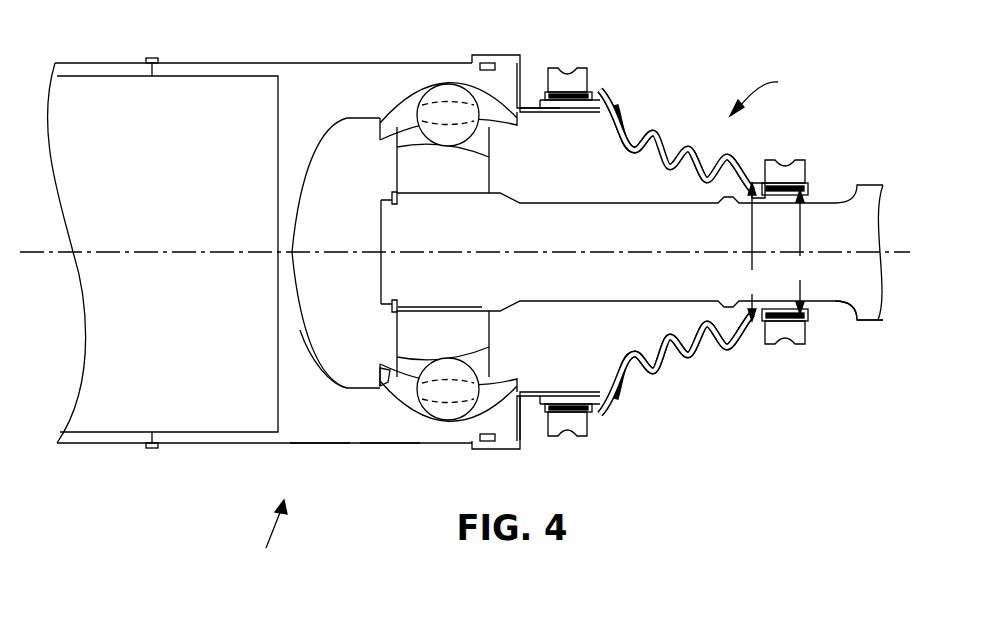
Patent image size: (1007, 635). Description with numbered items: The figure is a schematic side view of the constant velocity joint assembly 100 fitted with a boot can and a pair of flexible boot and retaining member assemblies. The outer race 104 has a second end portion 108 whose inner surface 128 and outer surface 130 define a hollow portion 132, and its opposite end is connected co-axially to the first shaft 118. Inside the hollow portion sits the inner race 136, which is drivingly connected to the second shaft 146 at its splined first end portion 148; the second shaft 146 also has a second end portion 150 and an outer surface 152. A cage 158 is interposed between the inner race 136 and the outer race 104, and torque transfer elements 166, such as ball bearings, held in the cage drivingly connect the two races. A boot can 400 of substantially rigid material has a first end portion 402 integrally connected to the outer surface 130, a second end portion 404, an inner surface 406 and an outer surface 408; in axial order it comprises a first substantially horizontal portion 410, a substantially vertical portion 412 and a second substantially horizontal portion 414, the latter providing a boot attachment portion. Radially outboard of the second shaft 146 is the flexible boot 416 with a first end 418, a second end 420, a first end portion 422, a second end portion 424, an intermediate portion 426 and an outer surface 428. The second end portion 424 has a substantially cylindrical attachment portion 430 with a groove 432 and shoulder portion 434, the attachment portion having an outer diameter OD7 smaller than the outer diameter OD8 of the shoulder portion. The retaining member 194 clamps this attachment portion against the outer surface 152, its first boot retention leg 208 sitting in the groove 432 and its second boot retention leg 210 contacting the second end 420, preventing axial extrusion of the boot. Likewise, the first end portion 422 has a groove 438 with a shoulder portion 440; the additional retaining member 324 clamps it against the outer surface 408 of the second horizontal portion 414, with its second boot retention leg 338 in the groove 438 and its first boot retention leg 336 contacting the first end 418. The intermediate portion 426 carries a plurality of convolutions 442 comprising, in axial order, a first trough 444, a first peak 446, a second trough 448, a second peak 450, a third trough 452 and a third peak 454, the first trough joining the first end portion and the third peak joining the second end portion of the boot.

The constant velocity joint assembly 100 is at (263, 540).
The outer race 104 is at (240, 443).
The second end portion 108 is at (388, 443).
The first shaft 118 is at (115, 443).
The inner surface 128 is at (347, 391).
The outer surface 130 is at (318, 443).
The hollow portion 132 is at (353, 369).
The inner race 136 is at (452, 344).
The second shaft 146 is at (525, 237).
The first end portion 148 is at (442, 307).
The second end portion 150 is at (873, 322).
The outer surface 152 is at (858, 322).
The cage 158 is at (387, 380).
The torque transfer elements 166 is at (445, 414).
The retaining member 194 is at (705, 325).
The first boot retention leg 208 is at (778, 193).
The second boot retention leg 210 is at (812, 188).
The additional retaining member 324 is at (568, 75).
The first boot retention leg 336 is at (572, 437).
The second boot retention leg 338 is at (595, 418).
The boot can 400 is at (519, 75).
The first end portion 402 is at (490, 62).
The second end portion 404 is at (595, 404).
The inner surface 406 is at (518, 112).
The outer surface 408 is at (540, 100).
The first substantially horizontal portion 410 is at (493, 452).
The substantially vertical portion 412 is at (523, 433).
The second substantially horizontal portion 414 is at (572, 437).
The flexible boot 416 is at (657, 145).
The first end 418 is at (549, 100).
The second end 420 is at (806, 320).
The first end portion 422 is at (613, 103).
The second end portion 424 is at (751, 183).
The intermediate portion 426 is at (701, 147).
The outer surface 428 is at (631, 108).
The substantially cylindrical attachment portion 430 is at (803, 183).
The groove 432 is at (763, 196).
The shoulder portion 434 is at (736, 334).
The groove 438 is at (590, 103).
The shoulder portion 440 is at (601, 90).
The convolutions 442 is at (763, 87).
The first trough 444 is at (633, 361).
The first peak 446 is at (634, 384).
The second trough 448 is at (664, 340).
The second peak 450 is at (686, 360).
The third trough 452 is at (710, 350).
The third peak 454 is at (722, 350).
The outer diameter OD7 is at (800, 252).
The outer diameter OD8 is at (752, 252).